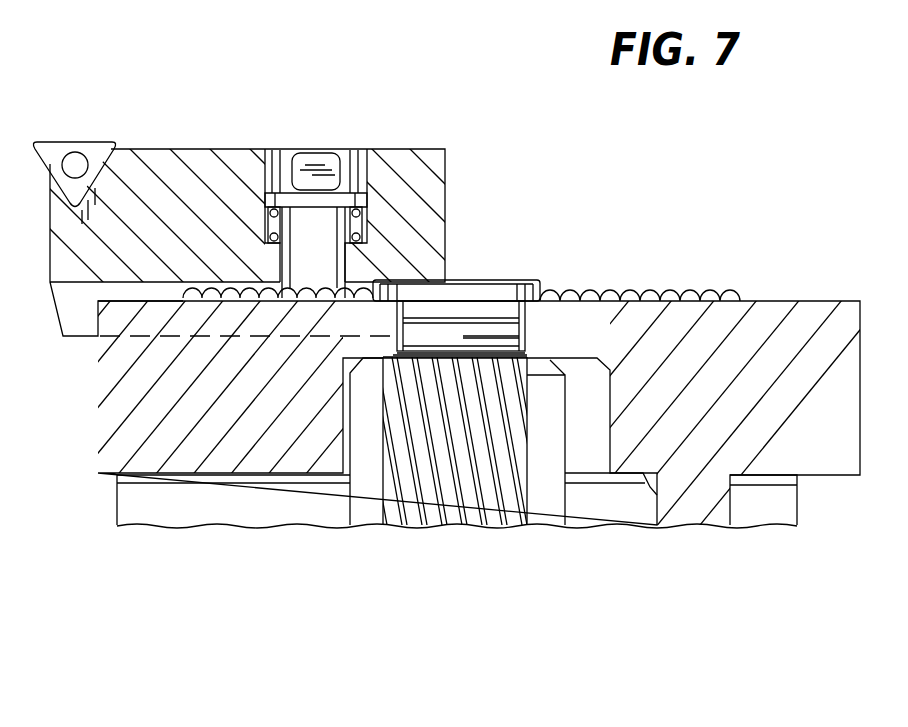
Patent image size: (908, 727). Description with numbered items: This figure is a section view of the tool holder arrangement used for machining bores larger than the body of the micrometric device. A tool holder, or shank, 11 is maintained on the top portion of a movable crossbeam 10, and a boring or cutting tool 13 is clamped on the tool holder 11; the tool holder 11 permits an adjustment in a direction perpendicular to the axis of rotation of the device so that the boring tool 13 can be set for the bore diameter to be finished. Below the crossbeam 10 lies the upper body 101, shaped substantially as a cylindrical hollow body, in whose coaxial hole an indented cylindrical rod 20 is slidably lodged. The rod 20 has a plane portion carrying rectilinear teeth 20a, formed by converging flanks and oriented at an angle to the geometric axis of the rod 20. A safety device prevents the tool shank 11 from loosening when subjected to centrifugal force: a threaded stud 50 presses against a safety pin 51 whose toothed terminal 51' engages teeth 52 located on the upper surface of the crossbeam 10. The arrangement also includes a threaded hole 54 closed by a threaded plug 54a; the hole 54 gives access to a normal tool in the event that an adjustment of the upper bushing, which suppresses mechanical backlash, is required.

The movable crossbeam 10 is at (760, 320).
The tool holder 11 is at (415, 136).
The boring or cutting tool 13 is at (74, 140).
The indented cylindrical rod 20 is at (537, 500).
The rectilinear teeth 20a is at (487, 528).
The threaded stud 50 is at (310, 160).
The safety pin 51 is at (301, 195).
The toothed terminal 51' is at (391, 263).
The teeth 52 is at (253, 335).
The threaded hole 54 is at (525, 342).
The threaded plug 54a is at (490, 315).
The upper body 101 is at (227, 507).